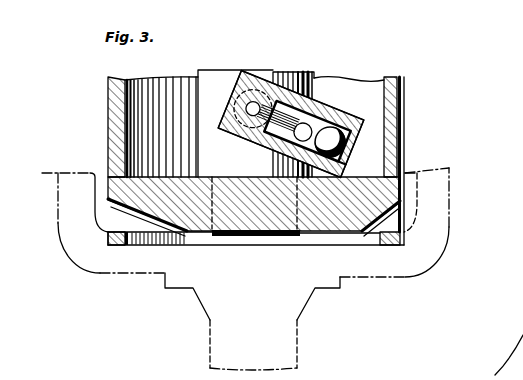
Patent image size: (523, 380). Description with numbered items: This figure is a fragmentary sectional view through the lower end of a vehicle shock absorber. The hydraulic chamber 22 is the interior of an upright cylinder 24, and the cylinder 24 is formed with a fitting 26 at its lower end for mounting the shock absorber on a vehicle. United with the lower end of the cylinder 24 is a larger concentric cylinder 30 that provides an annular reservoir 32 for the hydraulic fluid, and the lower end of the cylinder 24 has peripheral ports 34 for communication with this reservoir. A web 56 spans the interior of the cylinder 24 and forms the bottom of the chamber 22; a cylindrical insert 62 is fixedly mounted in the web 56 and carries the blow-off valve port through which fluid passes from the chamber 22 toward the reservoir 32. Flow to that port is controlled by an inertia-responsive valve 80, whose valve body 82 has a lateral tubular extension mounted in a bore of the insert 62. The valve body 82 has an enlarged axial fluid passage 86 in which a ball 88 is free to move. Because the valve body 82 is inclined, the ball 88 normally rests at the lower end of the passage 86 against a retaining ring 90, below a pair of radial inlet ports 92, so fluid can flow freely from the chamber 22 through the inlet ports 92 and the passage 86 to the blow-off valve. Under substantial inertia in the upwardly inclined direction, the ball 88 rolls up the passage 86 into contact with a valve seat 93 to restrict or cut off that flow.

The hydraulic chamber 22 is at (374, 119).
The upright cylinder 24 is at (117, 116).
The fitting 26 is at (210, 367).
The larger concentric cylinder 30 is at (234, 242).
The annular reservoir 32 is at (97, 173).
The peripheral ports 34 is at (108, 213).
The web 56 is at (252, 237).
The cylindrical insert 62 is at (215, 80).
The inertia-responsive valve 80 is at (318, 96).
The valve body 82 is at (272, 90).
The fluid passage 86 is at (312, 76).
The ball 88 is at (347, 125).
The retaining ring 90 is at (340, 158).
The radial inlet ports 92 is at (333, 128).
The valve seat 93 is at (262, 149).